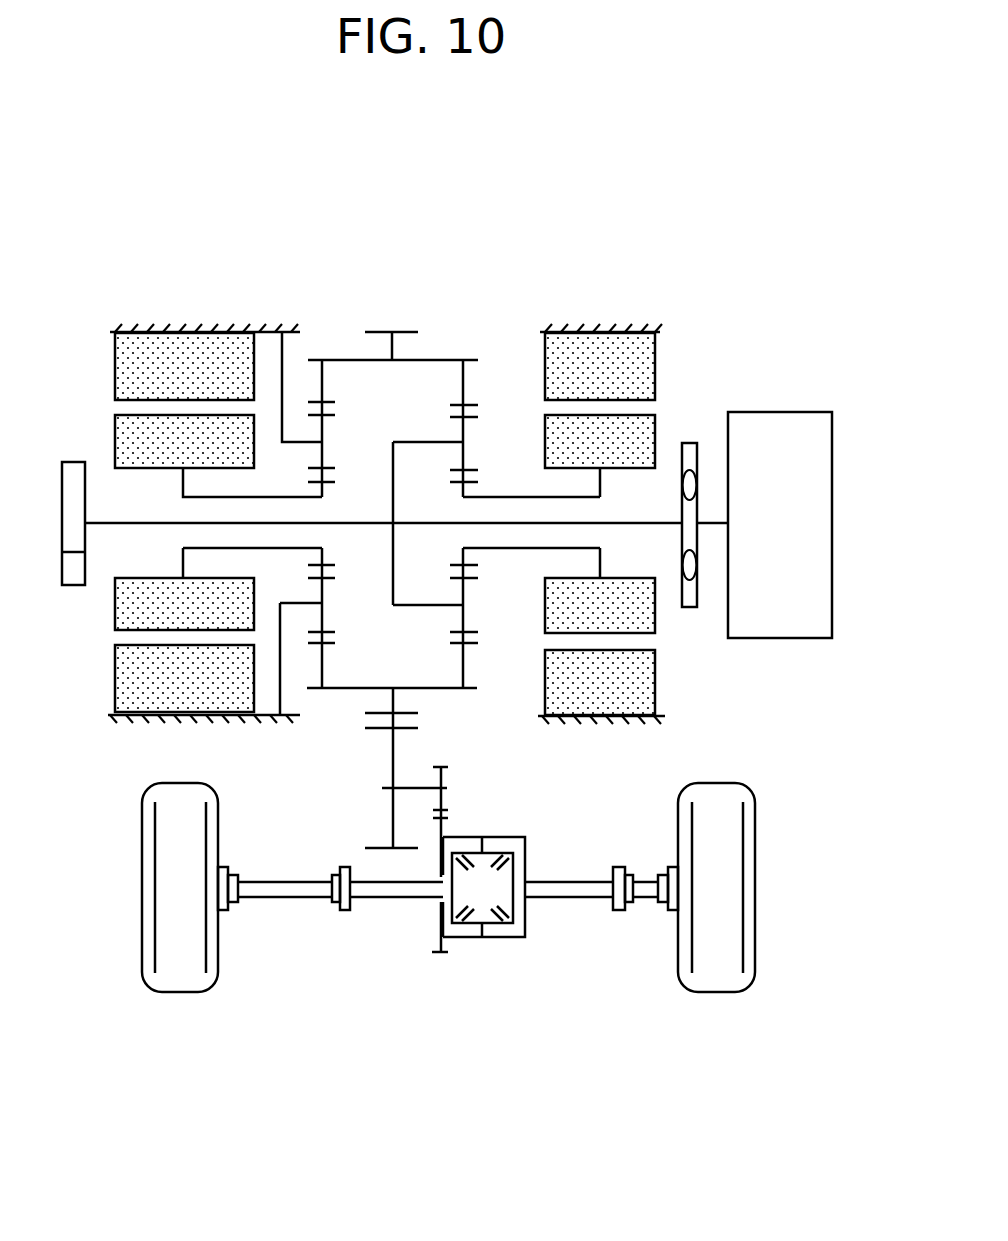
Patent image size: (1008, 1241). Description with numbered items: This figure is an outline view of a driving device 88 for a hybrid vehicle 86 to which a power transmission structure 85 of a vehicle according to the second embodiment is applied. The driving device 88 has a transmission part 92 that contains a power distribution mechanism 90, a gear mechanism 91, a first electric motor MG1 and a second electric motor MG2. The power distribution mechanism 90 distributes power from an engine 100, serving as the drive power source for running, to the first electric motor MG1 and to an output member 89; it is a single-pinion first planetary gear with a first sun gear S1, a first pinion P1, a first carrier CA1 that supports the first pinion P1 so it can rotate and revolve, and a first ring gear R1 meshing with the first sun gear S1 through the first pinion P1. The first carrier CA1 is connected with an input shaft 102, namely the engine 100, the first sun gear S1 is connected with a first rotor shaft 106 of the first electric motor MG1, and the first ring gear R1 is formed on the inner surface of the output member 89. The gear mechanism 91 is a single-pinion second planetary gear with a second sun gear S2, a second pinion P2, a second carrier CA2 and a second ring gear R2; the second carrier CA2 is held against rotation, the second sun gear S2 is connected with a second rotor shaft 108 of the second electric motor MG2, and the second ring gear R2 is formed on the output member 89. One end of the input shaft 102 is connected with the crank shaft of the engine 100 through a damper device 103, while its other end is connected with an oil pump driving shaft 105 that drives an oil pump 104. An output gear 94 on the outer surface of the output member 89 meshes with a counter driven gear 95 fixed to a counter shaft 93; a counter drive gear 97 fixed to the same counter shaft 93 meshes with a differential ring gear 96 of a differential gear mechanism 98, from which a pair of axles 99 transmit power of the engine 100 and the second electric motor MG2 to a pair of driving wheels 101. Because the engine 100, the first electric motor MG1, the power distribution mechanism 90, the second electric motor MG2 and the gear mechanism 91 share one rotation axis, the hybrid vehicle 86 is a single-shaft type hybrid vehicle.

The power transmission structure 85 is at (352, 564).
The hybrid vehicle 86 is at (718, 172).
The driving device 88 is at (303, 1036).
The output member 89 is at (390, 308).
The power distribution mechanism 90 is at (463, 352).
The gear mechanism 91 is at (328, 352).
The transmission part 92 is at (293, 255).
The counter shaft 93 is at (408, 786).
The output gear 94 is at (378, 332).
The counter driven gear 95 is at (405, 730).
The differential ring gear 96 is at (448, 815).
The counter drive gear 97 is at (448, 770).
The differential gear mechanism 98 is at (516, 945).
The axles 99 is at (285, 898).
The engine 100 is at (775, 639).
The driving wheels 101 is at (180, 975).
The input shaft 102 is at (646, 526).
The damper device 103 is at (683, 608).
The oil pump 104 is at (73, 470).
The oil pump driving shaft 105 is at (200, 522).
The first rotor shaft 106 is at (568, 498).
The second rotor shaft 108 is at (213, 547).
The first ring gear R1 is at (470, 405).
The first pinion P1 is at (470, 418).
The first sun gear S1 is at (470, 484).
The first carrier CA1 is at (417, 440).
The second ring gear R2 is at (330, 400).
The second pinion P2 is at (330, 468).
The second sun gear S2 is at (330, 482).
The second carrier CA2 is at (297, 443).
The first electric motor MG1 is at (601, 524).
The second electric motor MG2 is at (204, 523).